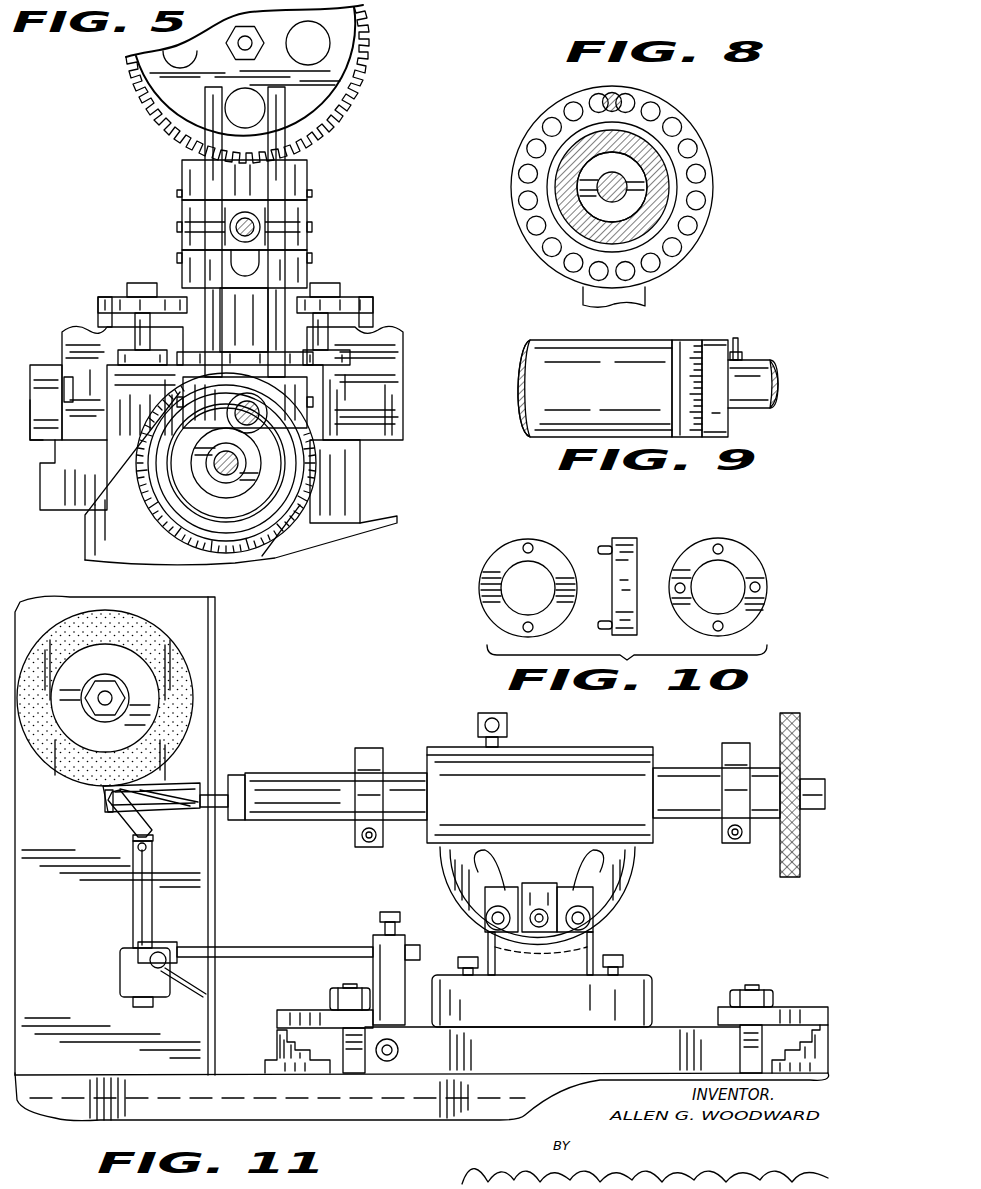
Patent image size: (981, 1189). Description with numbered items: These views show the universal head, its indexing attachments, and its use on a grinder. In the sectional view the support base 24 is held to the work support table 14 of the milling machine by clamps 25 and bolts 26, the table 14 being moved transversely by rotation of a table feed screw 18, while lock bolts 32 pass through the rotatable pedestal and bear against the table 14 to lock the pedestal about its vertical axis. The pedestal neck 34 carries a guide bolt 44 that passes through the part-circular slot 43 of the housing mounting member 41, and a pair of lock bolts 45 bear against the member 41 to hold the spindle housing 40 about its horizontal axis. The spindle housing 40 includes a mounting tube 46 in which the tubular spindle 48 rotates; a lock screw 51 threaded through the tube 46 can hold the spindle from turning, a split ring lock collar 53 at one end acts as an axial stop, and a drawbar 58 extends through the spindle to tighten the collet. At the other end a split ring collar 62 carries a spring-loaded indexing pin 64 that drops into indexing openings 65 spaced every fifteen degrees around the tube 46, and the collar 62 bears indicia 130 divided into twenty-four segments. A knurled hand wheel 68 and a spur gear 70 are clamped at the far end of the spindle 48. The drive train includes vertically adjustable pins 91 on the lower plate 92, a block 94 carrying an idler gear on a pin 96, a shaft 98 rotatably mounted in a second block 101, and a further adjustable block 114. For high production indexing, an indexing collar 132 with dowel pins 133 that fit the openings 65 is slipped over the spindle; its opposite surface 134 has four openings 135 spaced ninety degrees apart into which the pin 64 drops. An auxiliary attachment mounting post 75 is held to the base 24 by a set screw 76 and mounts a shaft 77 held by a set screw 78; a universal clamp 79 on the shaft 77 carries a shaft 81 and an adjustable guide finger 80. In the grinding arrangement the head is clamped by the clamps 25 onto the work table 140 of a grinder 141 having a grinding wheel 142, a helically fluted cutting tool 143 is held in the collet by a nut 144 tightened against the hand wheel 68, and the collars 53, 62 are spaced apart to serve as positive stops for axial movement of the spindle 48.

In FIG. 5, the work support table 14 is at (400, 370).
In FIG. 5, the table feed screw 18 is at (220, 465).
In FIG. 11, the support base 24 is at (640, 1003).
In FIG. 11, the clamps 25 is at (277, 1040).
In FIG. 11, the bolts 26 is at (330, 1000).
In FIG. 11, the lock bolts 32 is at (465, 957).
In FIG. 11, the neck 34 is at (580, 952).
In FIG. 11, the spindle housing 40 is at (660, 745).
In FIG. 11, the housing mounting member 41 is at (620, 870).
In FIG. 11, the part-circular slot 43 is at (470, 870).
In FIG. 11, the guide bolt 44 is at (540, 905).
In FIG. 11, the lock bolts 45 is at (495, 918).
In FIG. 8, the mounting tube 46 is at (700, 195).
In FIG. 9, the mounting tube 46 is at (570, 415).
In FIG. 11, the mounting tube 46 is at (455, 762).
In FIG. 8, the tubular spindle 48 is at (655, 168).
In FIG. 9, the tubular spindle 48 is at (762, 375).
In FIG. 11, the tubular spindle 48 is at (708, 778).
In FIG. 11, the lock screw 51 is at (478, 725).
In FIG. 11, the split ring lock collar 53 is at (356, 755).
In FIG. 8, the drawbar 58 is at (575, 190).
In FIG. 9, the split ring collar 62 is at (715, 418).
In FIG. 11, the split ring collar 62 is at (722, 830).
In FIG. 8, the indexing pin 64 is at (614, 96).
In FIG. 9, the indexing pin 64 is at (742, 345).
In FIG. 8, the indexing openings 65 is at (672, 125).
In FIG. 11, the knurled hand wheel 68 is at (800, 748).
In FIG. 5, the spur gear 70 is at (345, 47).
In FIG. 11, the auxiliary attachment mounting post 75 is at (373, 945).
In FIG. 11, the set screw 76 is at (397, 1062).
In FIG. 11, the shaft 77 is at (238, 947).
In FIG. 11, the set screw 78 is at (388, 912).
In FIG. 11, the universal clamp 79 is at (160, 942).
In FIG. 11, the adjustable guide finger 80 is at (125, 813).
In FIG. 11, the shaft 81 is at (133, 892).
In FIG. 5, the vertically adjustable pins 91 is at (287, 103).
In FIG. 5, the lower plate 92 is at (195, 360).
In FIG. 5, the block 94 is at (300, 388).
In FIG. 5, the pin 96 is at (255, 412).
In FIG. 5, the shaft 98 is at (235, 228).
In FIG. 5, the second block 101 is at (300, 210).
In FIG. 5, the block 114 is at (192, 172).
In FIG. 9, the indicia 130 is at (700, 343).
In FIG. 9, the indexing collar 132 is at (680, 363).
In FIG. 10, the indexing collar 132 is at (623, 558).
In FIG. 10, the dowel pins 133 is at (533, 548).
In FIG. 10, the surface 134 is at (755, 565).
In FIG. 10, the openings 135 is at (758, 592).
In FIG. 11, the work table 140 is at (118, 1078).
In FIG. 11, the grinder 141 is at (205, 682).
In FIG. 11, the grinding wheel 142 is at (178, 655).
In FIG. 11, the helically fluted cutting tool 143 is at (185, 783).
In FIG. 11, the nut 144 is at (815, 808).